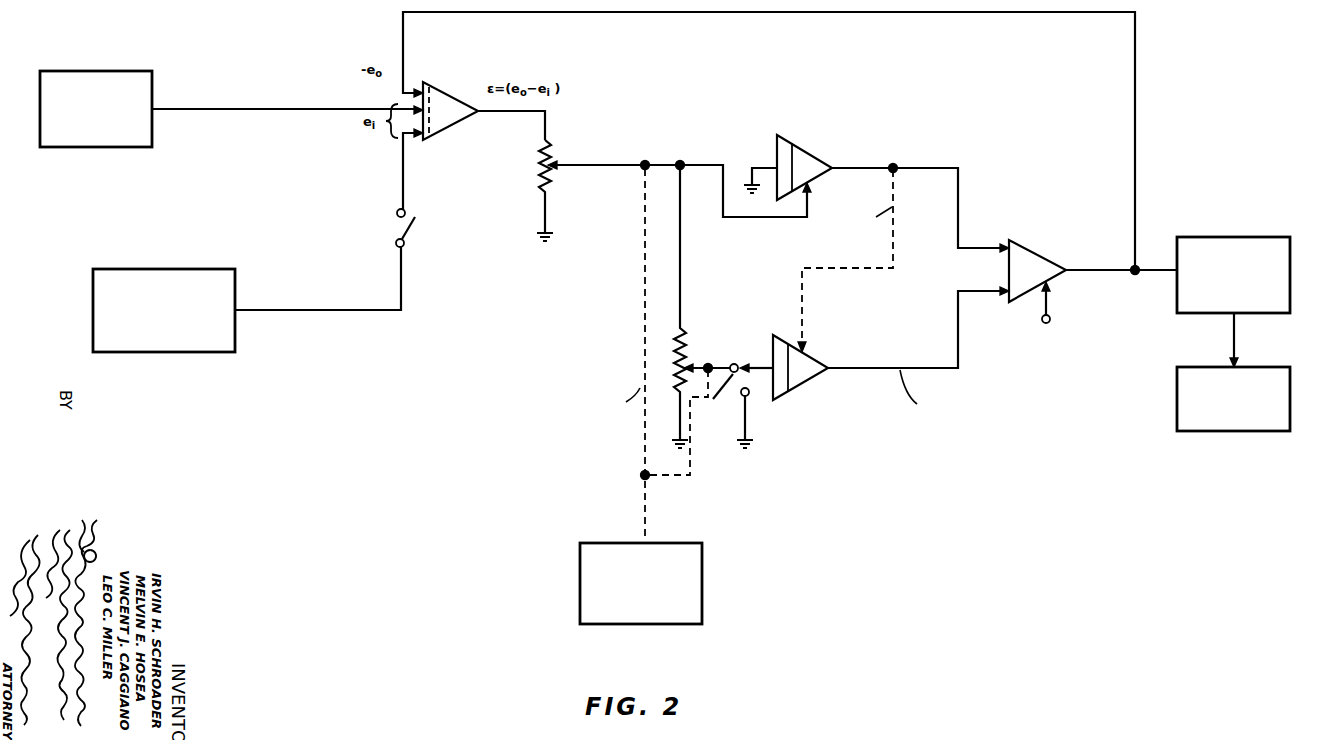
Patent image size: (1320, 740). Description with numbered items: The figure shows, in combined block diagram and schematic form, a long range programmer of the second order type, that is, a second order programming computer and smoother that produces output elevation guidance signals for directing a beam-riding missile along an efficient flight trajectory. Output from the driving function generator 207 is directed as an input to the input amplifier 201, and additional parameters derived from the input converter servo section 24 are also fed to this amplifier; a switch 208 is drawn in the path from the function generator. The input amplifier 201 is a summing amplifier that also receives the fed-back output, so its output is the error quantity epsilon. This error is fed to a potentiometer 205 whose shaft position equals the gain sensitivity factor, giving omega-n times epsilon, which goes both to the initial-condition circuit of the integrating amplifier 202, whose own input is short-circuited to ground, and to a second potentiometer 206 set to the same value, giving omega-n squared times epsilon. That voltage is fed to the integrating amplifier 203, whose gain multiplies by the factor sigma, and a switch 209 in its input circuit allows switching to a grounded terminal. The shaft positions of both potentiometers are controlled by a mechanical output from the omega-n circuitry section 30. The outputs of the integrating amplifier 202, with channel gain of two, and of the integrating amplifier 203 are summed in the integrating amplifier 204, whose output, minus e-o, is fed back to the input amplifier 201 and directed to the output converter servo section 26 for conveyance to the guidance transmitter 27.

The input converter servo section 24 is at (116, 70).
The input amplifier 201 is at (449, 87).
The potentiometer 205 is at (553, 152).
The integrating amplifier 202 is at (808, 155).
The second potentiometer 206 is at (687, 327).
The switch 209 is at (711, 419).
The integrating amplifier 203 is at (810, 383).
The integrating amplifier 204 is at (1044, 252).
The output converter servo section 26 is at (1250, 237).
The guidance transmitter 27 is at (1262, 367).
The driving function generator 207 is at (195, 268).
The switch 208 is at (413, 232).
The omega-n circuitry section 30 is at (681, 543).